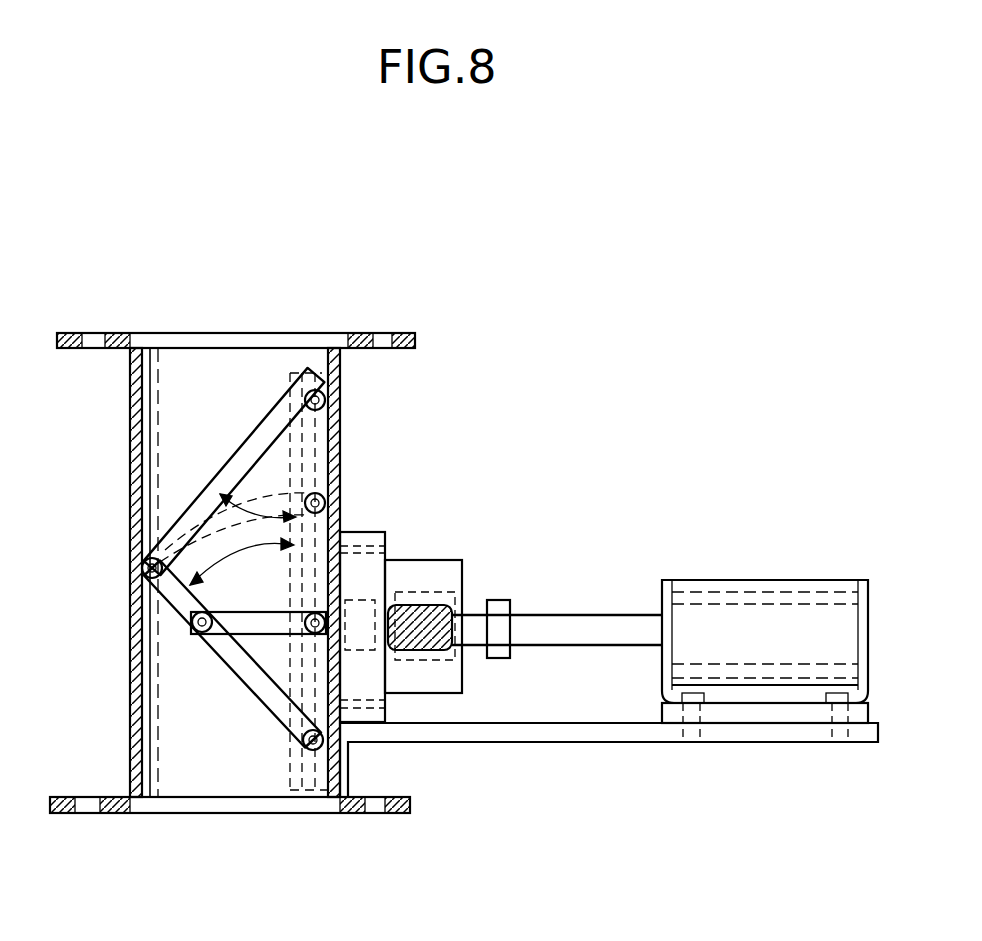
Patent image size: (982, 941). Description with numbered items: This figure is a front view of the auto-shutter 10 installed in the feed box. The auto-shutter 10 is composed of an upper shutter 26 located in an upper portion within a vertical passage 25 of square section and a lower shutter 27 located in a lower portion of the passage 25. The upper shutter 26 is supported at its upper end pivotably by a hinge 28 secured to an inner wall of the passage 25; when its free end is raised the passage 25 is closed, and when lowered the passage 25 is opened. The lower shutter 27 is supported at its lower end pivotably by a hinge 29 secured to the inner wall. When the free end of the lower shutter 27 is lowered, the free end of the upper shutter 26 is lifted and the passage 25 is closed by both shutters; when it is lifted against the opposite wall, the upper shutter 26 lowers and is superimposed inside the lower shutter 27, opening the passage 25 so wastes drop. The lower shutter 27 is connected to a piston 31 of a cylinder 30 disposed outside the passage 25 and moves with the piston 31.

The auto-shutter 10 is at (355, 333).
The vertical passage 25 is at (182, 388).
The upper shutter 26 is at (245, 432).
The lower shutter 27 is at (245, 670).
The hinge 28 is at (326, 400).
The hinge 29 is at (324, 742).
The cylinder 30 is at (738, 618).
The piston 31 is at (258, 627).